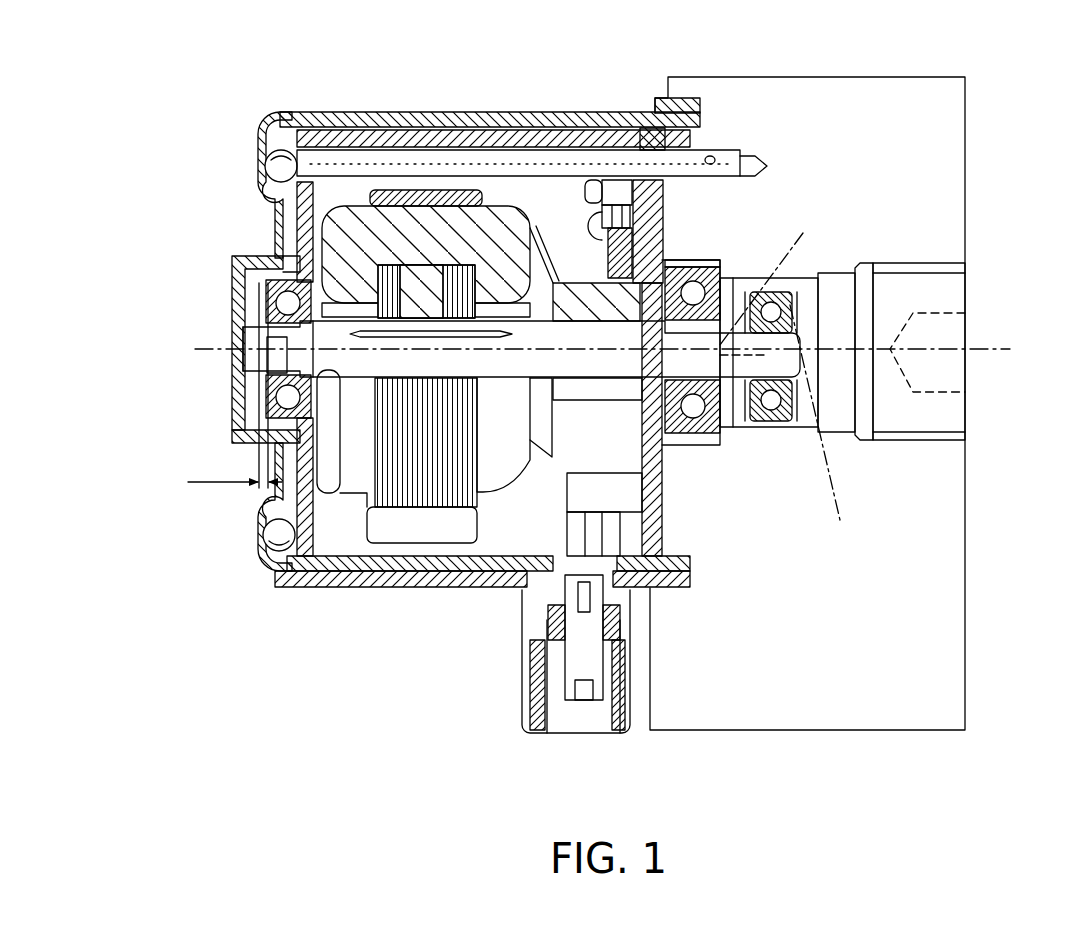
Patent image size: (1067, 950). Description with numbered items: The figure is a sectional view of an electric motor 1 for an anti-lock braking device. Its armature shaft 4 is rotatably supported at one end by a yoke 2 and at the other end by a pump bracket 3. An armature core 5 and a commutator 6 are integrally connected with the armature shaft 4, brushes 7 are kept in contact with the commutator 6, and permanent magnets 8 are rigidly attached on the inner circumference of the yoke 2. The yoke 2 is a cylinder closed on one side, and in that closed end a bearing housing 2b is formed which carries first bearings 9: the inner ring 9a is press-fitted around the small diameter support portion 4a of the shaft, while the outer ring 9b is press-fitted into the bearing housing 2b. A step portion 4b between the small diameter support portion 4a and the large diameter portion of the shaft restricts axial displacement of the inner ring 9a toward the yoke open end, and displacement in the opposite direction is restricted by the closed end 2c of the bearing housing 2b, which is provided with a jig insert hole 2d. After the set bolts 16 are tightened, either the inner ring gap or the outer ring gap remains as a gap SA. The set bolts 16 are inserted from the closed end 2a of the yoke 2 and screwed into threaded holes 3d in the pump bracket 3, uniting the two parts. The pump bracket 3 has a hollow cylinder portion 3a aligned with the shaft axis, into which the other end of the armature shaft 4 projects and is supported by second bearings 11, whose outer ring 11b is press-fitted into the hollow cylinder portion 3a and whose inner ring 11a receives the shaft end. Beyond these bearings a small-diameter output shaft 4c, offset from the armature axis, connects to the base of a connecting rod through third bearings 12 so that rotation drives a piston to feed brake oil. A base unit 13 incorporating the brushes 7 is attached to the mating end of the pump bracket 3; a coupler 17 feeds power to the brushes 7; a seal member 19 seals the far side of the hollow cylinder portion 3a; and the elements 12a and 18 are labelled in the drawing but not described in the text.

The electric motor 1 is at (355, 98).
The yoke 2 is at (568, 127).
The closed end of the yoke 2a is at (270, 530).
The bearing housing 2b is at (283, 263).
The closed end of the bearing housing 2c is at (237, 408).
The jig insert hole 2d is at (233, 363).
The pump bracket 3 is at (915, 105).
The hollow cylinder portion 3a is at (743, 420).
The threaded holes 3d is at (712, 158).
The armature shaft 4 is at (510, 337).
The small diameter support portion 4a is at (227, 335).
The step portion 4b is at (340, 465).
The output shaft 4c is at (793, 345).
The armature core 5 is at (355, 478).
The commutator 6 is at (612, 397).
The brushes 7 is at (597, 267).
The permanent magnets 8 is at (426, 520).
The first bearings 9 is at (280, 262).
The inner ring of the first bearings 9a is at (267, 323).
The outer ring of the first bearings 9b is at (280, 257).
The second bearings 11 is at (713, 253).
The inner ring of the second bearings 11a is at (721, 345).
The outer ring of the second bearings 11b is at (683, 263).
The third bearings 12 is at (797, 275).
The bearing holder 12a is at (780, 427).
The base unit 13 is at (647, 270).
The set bolts 16 is at (452, 162).
The coupler 17 is at (584, 690).
The flange plate 18 is at (462, 580).
The seal member 19 is at (950, 295).
The gap SA is at (235, 465).